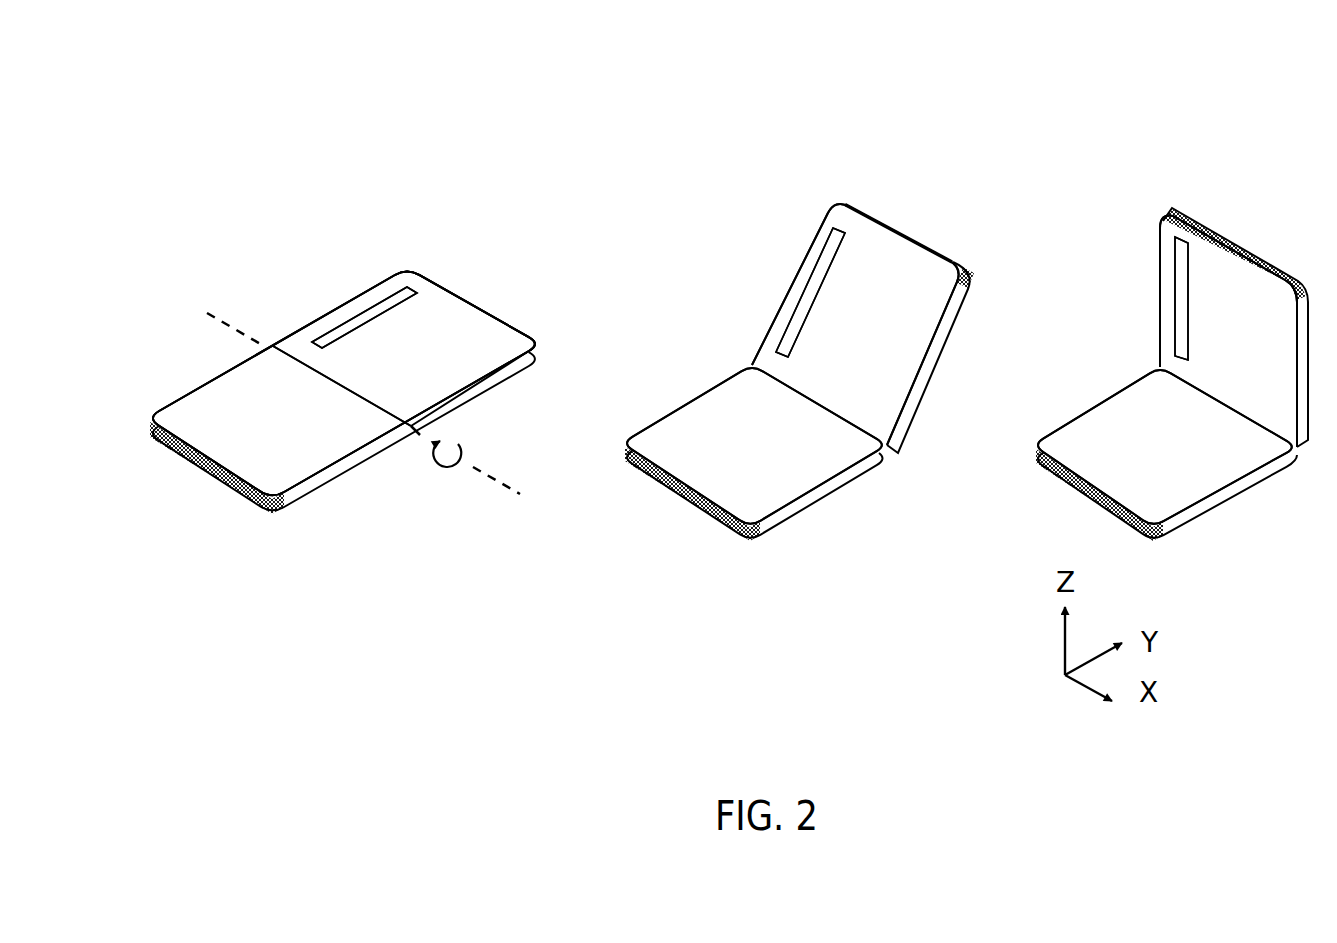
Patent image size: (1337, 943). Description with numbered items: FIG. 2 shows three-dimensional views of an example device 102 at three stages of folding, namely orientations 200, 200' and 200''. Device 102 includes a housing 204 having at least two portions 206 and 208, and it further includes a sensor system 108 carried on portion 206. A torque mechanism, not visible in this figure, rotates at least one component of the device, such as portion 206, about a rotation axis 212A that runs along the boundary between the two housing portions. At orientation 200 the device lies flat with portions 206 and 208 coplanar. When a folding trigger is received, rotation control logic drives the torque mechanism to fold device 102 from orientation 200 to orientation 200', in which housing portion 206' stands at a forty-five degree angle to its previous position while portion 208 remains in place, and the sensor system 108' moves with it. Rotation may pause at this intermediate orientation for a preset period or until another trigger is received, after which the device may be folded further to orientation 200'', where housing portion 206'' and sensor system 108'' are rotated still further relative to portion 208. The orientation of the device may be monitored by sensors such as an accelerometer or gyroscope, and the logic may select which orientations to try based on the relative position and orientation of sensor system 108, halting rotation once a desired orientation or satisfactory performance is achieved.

The orientation 200 is at (344, 266).
The orientation 200' is at (793, 281).
The orientation 200'' is at (1167, 281).
The device 102 is at (258, 276).
The housing 204 is at (240, 503).
The housing portion 206 is at (404, 348).
The housing portion 206' is at (863, 328).
The housing portion 206'' is at (1234, 327).
The housing portion 208 is at (301, 441).
The sensor system 108 is at (352, 307).
The sensor system 108' is at (789, 286).
The sensor system 108'' is at (1132, 289).
The rotation axis 212A is at (236, 326).